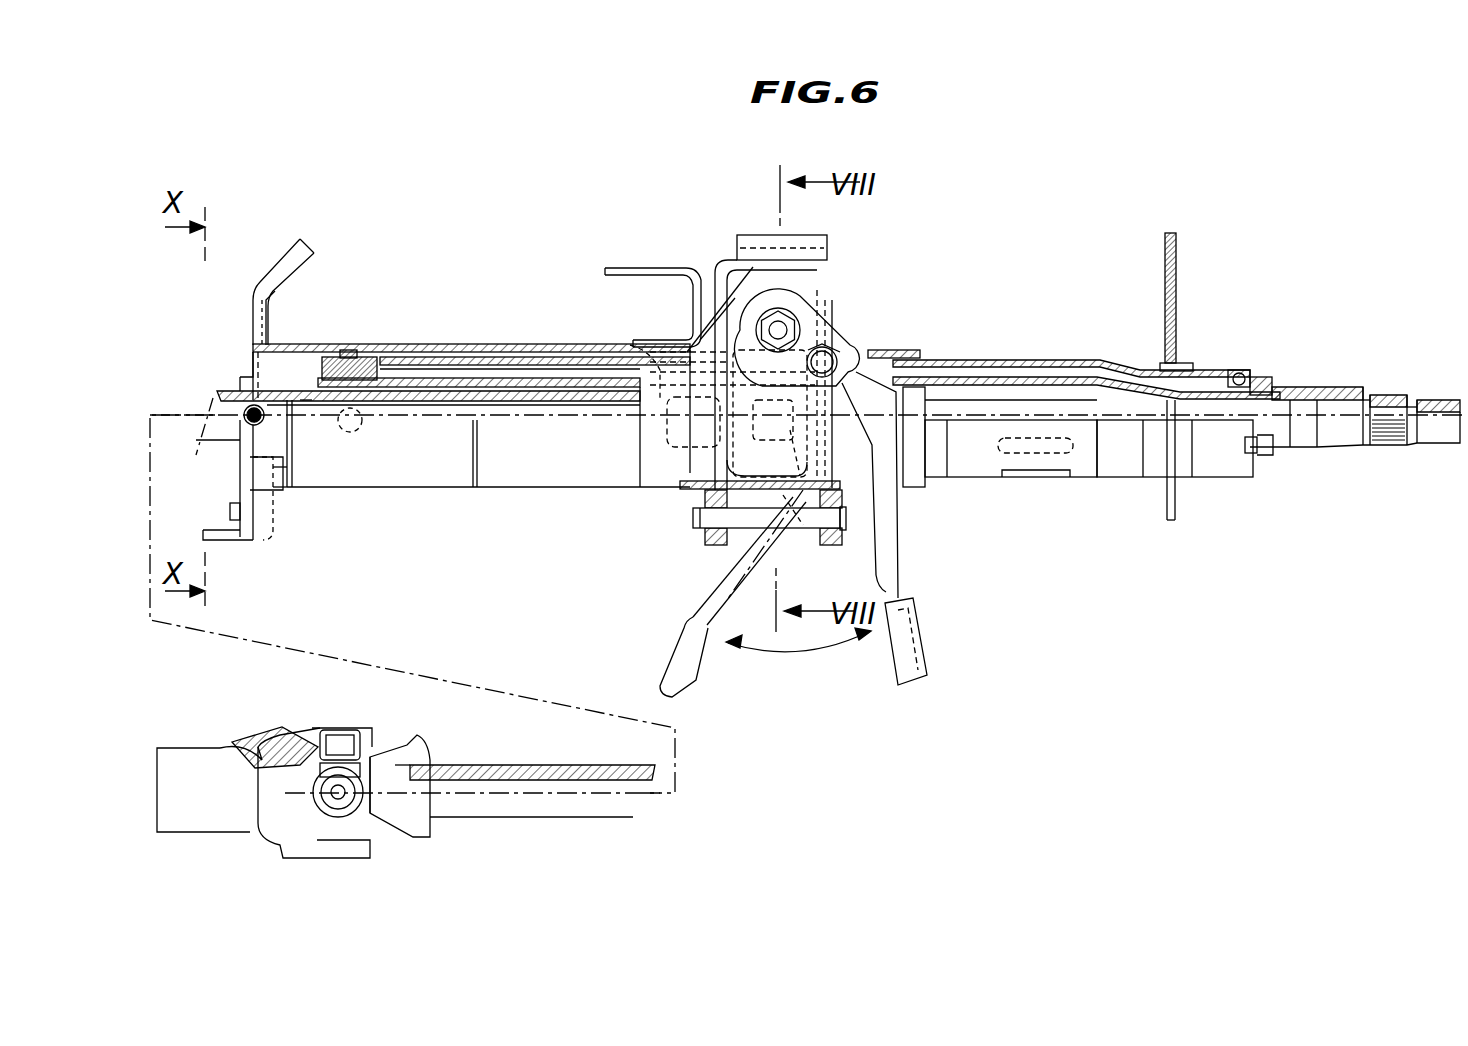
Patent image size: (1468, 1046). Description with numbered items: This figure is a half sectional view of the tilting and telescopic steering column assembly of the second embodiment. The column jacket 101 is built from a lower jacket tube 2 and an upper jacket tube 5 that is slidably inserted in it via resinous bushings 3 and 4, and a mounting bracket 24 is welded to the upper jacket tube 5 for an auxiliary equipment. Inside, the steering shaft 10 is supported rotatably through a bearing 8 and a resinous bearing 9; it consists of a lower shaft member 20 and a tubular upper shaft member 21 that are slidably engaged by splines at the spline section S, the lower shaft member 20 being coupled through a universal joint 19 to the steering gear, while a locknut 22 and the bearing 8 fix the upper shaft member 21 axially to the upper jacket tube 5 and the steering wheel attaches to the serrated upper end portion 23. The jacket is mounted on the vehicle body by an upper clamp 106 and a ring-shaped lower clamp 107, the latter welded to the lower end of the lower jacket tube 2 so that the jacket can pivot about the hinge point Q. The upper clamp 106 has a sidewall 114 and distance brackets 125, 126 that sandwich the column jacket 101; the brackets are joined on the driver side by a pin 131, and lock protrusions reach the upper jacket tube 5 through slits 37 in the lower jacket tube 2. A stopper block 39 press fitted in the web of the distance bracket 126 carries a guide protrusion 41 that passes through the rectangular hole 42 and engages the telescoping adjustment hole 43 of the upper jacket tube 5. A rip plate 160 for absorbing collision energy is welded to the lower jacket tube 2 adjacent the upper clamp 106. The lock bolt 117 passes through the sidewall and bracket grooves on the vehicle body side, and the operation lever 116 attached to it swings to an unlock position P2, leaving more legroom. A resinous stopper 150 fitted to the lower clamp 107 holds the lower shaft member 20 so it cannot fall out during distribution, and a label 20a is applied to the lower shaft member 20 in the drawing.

The lower jacket tube 2 is at (512, 344).
The resinous bushing 3 is at (912, 350).
The resinous bushing 4 is at (351, 357).
The upper jacket tube 5 is at (1030, 360).
The bearing 8 is at (1239, 372).
The resinous bearing 9 is at (327, 380).
The steering shaft 10 is at (972, 368).
The universal joint 19 is at (303, 850).
The lower shaft member 20 is at (423, 401).
The end portion of lower shaft 20a is at (245, 387).
The upper shaft member 21 is at (437, 378).
The locknut 22 is at (1272, 378).
The serrated upper end portion 23 is at (1387, 445).
The mounting bracket 24 is at (1180, 505).
The slit 37 is at (710, 423).
The stopper block 39 is at (710, 315).
The guide protrusion 41 is at (740, 460).
The rectangular hole 42 is at (790, 500).
The telescoping adjustment hole 43 is at (630, 347).
The column jacket 101 is at (1083, 352).
The upper clamp 106 is at (716, 248).
The lower clamp 107 is at (293, 246).
The sidewall 114 is at (700, 485).
The operation lever 116 is at (922, 658).
The lock bolt 117 is at (782, 330).
The distance bracket 125 is at (712, 548).
The distance bracket 126 is at (823, 545).
The pin 131 is at (697, 518).
The resinous stopper 150 is at (238, 550).
The rip plate 160 is at (638, 258).
The hinge point Q is at (245, 430).
The spline section S is at (512, 401).
The unlock position P2 is at (693, 670).